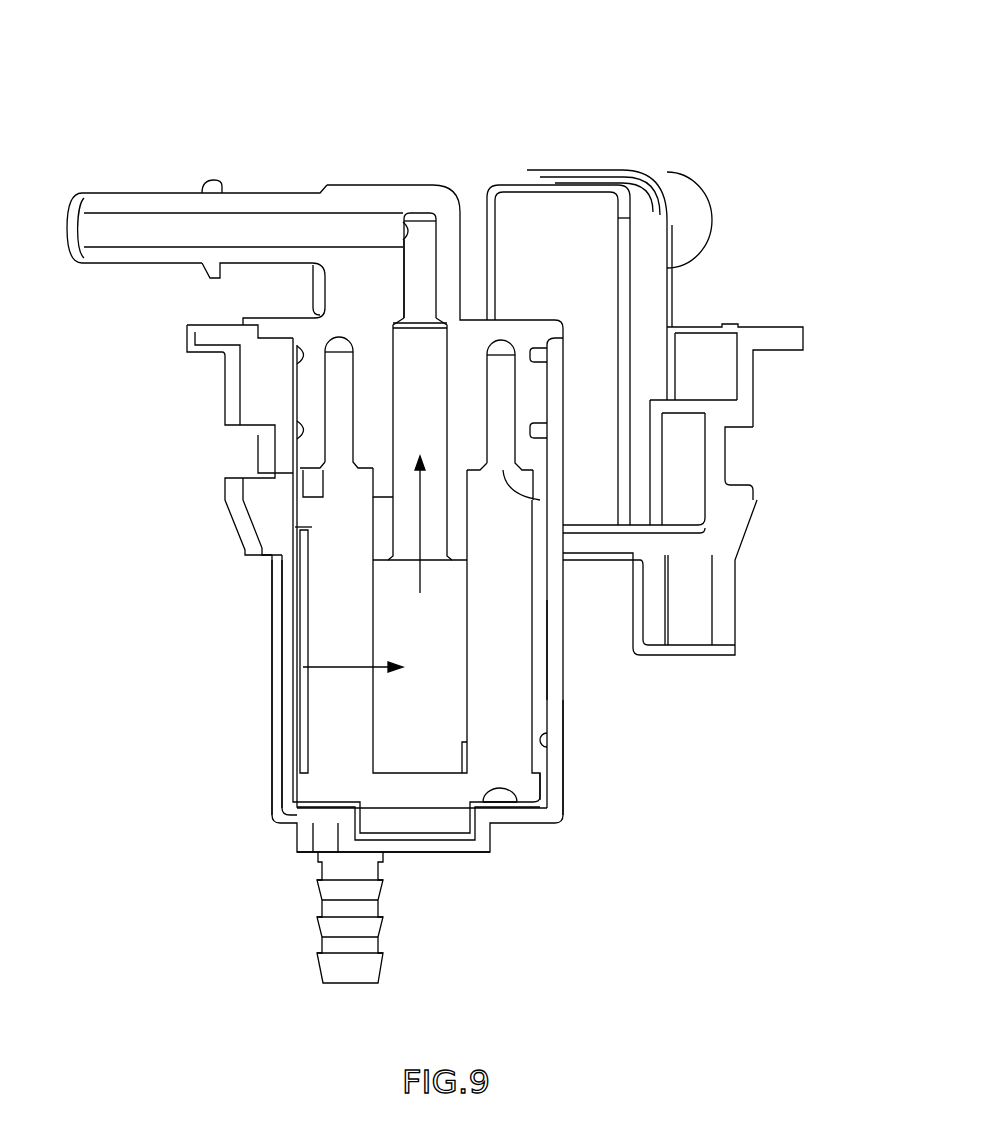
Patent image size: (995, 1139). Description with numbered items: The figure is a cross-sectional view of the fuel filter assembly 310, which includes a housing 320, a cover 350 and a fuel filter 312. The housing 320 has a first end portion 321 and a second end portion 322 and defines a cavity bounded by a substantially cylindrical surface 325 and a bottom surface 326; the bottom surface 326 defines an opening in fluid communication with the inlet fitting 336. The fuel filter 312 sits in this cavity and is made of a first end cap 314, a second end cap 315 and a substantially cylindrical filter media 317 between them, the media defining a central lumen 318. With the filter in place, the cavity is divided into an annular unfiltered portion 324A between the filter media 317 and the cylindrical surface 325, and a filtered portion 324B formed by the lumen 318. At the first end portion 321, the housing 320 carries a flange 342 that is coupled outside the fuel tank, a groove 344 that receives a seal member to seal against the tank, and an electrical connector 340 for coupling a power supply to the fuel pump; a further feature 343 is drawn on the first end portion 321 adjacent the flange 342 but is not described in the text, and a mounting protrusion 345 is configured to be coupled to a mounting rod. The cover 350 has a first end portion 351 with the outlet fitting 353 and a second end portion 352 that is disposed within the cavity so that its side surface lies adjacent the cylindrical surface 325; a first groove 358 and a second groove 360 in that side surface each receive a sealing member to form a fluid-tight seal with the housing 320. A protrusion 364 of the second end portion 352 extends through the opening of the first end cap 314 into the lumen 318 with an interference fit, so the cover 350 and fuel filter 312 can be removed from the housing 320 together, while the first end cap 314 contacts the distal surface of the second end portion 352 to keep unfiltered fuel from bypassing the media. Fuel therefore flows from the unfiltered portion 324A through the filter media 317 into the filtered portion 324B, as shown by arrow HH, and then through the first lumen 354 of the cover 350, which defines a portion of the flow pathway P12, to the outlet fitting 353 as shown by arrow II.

The fuel filter assembly 310 is at (63, 113).
The fuel filter 312 is at (530, 683).
The first end cap 314 is at (503, 540).
The second end cap 315 is at (523, 780).
The filter media 317 is at (500, 697).
The lumen 318 is at (410, 733).
The housing 320 is at (273, 727).
The first end portion 321 is at (225, 420).
The second end portion 322 is at (272, 800).
The unfiltered portion 324A is at (307, 687).
The filtered portion 324B is at (432, 693).
The cylindrical surface 325 is at (547, 747).
The bottom surface 326 is at (498, 695).
The inlet fitting 336 is at (373, 947).
The electrical connector 340 is at (677, 222).
The flange 342 is at (780, 335).
The groove 343 is at (752, 390).
The groove 344 is at (738, 458).
The mounting protrusion 345 is at (727, 622).
The cover 350 is at (357, 183).
The first end portion 351 is at (350, 283).
The second end portion 352 is at (385, 466).
The outlet fitting 353 is at (180, 205).
The first lumen 354 is at (420, 390).
The first groove 358 is at (540, 357).
The second groove 360 is at (543, 428).
The protrusion 364 is at (382, 530).
The arrow HH is at (333, 665).
The flow pathway P12 is at (417, 342).
The arrow II is at (423, 490).